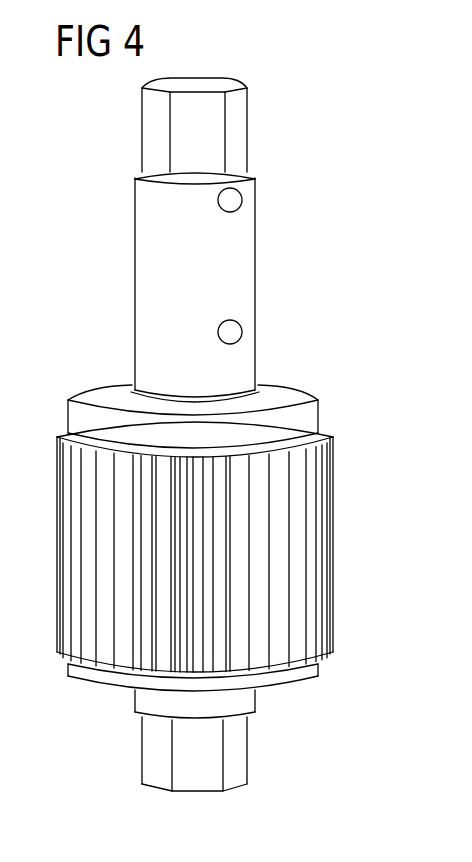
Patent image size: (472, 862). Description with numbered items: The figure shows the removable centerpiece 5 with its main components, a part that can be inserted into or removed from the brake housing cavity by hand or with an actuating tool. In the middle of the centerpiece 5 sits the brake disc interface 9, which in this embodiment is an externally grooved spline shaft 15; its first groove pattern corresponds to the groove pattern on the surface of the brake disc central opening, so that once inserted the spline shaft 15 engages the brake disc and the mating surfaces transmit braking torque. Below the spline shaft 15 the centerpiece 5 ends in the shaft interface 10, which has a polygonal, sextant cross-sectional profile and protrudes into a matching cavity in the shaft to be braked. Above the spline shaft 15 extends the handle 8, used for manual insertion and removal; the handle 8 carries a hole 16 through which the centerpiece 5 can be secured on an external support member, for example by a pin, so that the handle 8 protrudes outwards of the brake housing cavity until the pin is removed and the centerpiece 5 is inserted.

The removable centerpiece 5 is at (318, 94).
The handle 8 is at (243, 258).
The hole 16 is at (236, 332).
The brake disc interface 9 is at (352, 500).
The externally grooved spline shaft 15 is at (310, 607).
The shaft interface 10 is at (235, 755).